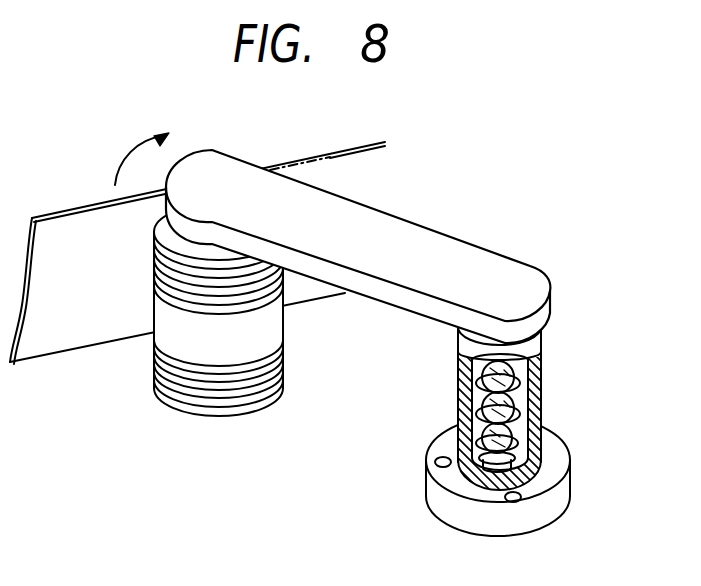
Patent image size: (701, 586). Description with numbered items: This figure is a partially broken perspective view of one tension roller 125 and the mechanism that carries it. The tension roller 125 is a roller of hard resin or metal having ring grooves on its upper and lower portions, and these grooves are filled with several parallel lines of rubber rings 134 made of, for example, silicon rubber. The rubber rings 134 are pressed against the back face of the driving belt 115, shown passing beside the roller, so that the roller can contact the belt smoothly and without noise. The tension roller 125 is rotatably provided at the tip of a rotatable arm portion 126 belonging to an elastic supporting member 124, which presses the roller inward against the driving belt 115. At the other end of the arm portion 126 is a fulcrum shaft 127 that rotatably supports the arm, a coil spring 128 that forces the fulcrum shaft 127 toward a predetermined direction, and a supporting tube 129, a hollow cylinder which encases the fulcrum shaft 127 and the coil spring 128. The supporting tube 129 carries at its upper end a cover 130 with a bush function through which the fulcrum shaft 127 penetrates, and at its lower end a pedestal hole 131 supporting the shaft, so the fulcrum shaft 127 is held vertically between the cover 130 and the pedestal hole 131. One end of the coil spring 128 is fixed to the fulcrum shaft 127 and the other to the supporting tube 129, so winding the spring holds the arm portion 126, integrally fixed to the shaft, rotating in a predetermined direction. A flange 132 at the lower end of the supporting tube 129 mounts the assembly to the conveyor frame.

The driving belt 115 is at (66, 200).
The elastic supporting member 124 is at (423, 203).
The tension roller 125 is at (283, 328).
The arm portion 126 is at (428, 238).
The fulcrum shaft 127 is at (536, 365).
The coil spring 128 is at (532, 396).
The supporting tube 129 is at (546, 414).
The cover 130 is at (536, 340).
The pedestal hole 131 is at (513, 456).
The flange 132 is at (436, 498).
The rubber rings 134 is at (156, 252).